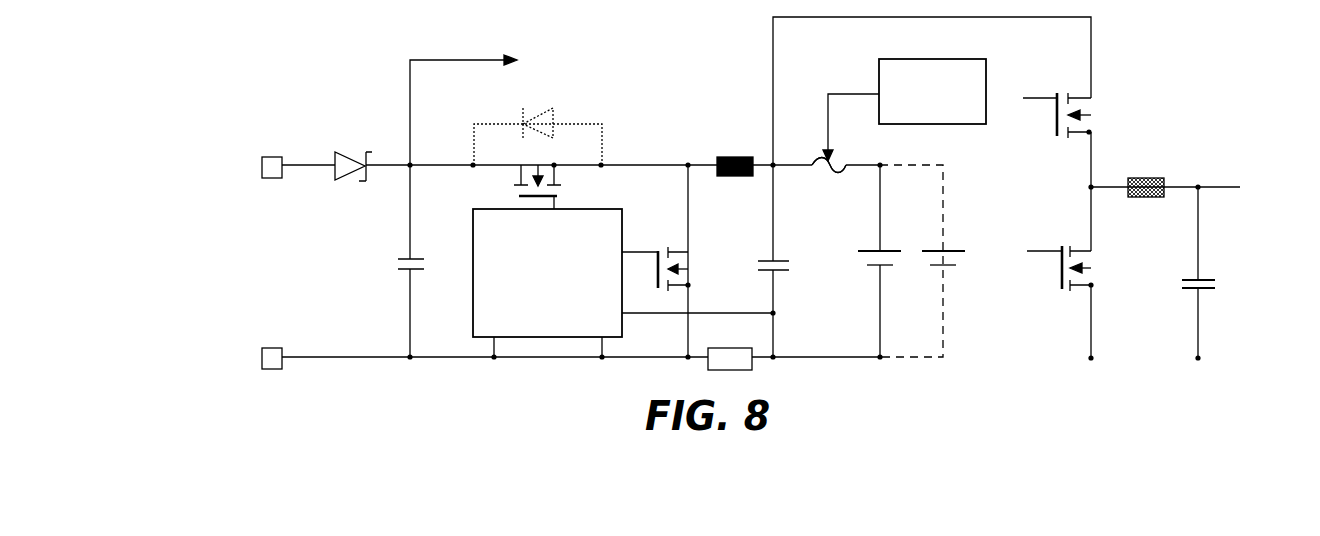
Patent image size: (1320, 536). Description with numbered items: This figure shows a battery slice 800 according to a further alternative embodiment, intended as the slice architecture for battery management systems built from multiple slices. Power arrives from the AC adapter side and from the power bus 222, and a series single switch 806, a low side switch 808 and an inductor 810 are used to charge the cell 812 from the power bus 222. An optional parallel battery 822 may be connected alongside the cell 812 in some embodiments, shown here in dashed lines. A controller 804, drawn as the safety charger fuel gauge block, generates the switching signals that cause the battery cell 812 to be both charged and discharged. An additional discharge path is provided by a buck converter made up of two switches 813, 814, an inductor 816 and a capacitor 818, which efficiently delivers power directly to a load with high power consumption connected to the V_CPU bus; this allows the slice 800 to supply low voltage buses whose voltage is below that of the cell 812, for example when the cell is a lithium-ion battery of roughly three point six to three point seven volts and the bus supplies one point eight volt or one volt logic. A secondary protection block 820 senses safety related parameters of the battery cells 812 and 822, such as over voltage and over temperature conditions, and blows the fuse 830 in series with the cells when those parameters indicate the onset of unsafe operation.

The battery slice 800 is at (310, 43).
The power bus 222 is at (478, 60).
The controller 804 is at (475, 240).
The series single switch 806 is at (536, 172).
The low side switch 808 is at (684, 264).
The inductor 810 is at (732, 158).
The cell 812 is at (872, 251).
The switch 813 is at (1093, 110).
The switch 814 is at (1093, 264).
The inductor 816 is at (1147, 178).
The capacitor 818 is at (1218, 286).
The secondary protection block 820 is at (897, 62).
The parallel battery 822 is at (936, 251).
The fuse 830 is at (838, 163).